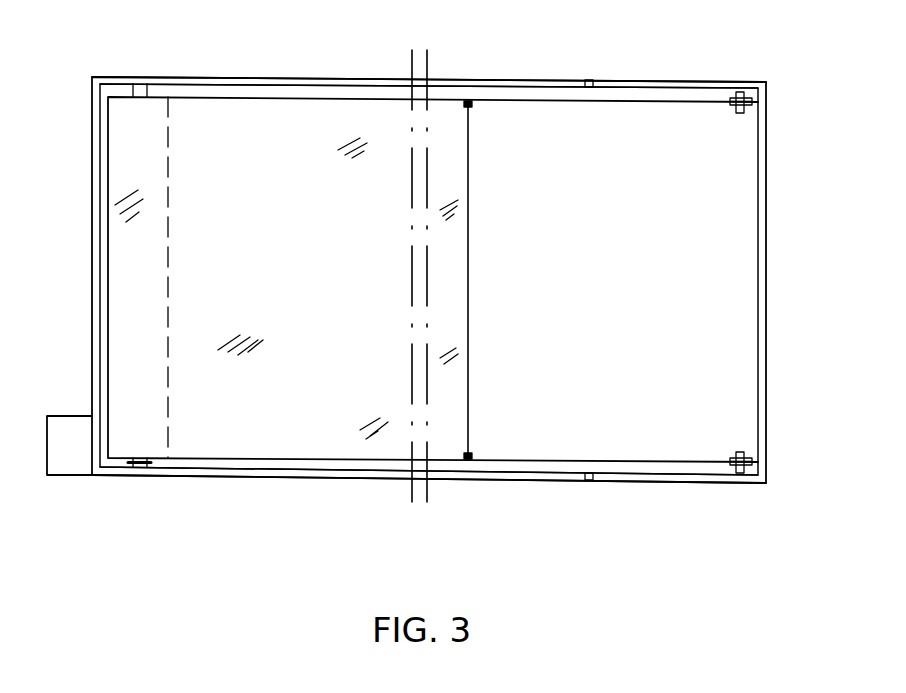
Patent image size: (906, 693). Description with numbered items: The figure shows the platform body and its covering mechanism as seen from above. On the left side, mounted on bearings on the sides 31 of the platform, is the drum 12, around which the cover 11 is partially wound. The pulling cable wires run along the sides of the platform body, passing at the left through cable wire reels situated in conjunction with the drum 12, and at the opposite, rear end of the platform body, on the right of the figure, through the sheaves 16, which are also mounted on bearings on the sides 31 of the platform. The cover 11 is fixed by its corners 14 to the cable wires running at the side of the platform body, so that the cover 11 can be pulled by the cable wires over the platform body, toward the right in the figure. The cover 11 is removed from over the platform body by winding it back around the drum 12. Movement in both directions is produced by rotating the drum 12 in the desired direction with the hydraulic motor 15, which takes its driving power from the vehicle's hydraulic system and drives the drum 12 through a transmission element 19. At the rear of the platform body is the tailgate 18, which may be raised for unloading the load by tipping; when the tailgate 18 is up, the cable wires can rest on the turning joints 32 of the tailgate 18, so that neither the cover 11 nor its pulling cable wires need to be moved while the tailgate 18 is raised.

The cover 11 is at (445, 287).
The drum 12 is at (122, 155).
The corners 14 is at (478, 98).
The hydraulic motor 15 is at (70, 437).
The sheaves 16 is at (753, 103).
The tailgate 18 is at (763, 302).
The transmission element 19 is at (122, 476).
The sides of the platform 31 is at (336, 78).
The turning joints 32 is at (590, 81).